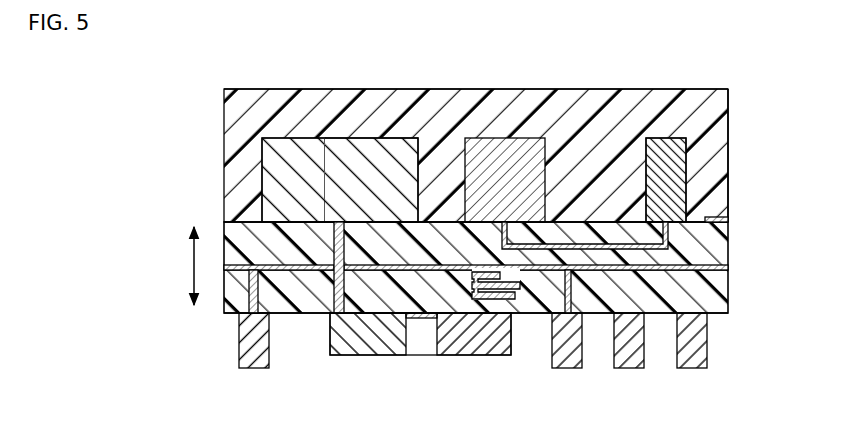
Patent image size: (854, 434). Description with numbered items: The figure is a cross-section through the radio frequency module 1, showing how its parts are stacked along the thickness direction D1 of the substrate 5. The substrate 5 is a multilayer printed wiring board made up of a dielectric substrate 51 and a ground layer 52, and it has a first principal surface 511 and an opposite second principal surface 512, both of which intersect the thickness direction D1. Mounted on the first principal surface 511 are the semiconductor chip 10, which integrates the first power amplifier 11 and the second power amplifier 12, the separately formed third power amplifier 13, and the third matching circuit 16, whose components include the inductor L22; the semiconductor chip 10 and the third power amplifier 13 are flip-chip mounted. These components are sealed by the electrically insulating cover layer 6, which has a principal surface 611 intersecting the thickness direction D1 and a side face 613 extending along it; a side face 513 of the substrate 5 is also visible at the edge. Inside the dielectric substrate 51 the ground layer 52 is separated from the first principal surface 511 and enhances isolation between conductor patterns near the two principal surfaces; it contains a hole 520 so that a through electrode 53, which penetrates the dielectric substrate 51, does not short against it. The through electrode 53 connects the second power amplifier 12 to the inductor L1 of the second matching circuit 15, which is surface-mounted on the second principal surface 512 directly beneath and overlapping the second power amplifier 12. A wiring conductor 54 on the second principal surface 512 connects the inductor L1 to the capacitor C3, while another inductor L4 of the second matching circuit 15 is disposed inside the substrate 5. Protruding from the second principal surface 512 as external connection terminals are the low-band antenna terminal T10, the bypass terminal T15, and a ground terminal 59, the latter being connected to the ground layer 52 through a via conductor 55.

The radio frequency module 1 is at (743, 62).
The substrate 5 is at (732, 244).
The cover layer 6 is at (732, 103).
The semiconductor chip 10 is at (261, 182).
The first power amplifier 11 is at (281, 151).
The second power amplifier 12 is at (370, 150).
The third power amplifier 13 is at (493, 140).
The second matching circuit 15 is at (375, 360).
The third matching circuit 16 is at (645, 158).
The dielectric substrate 51 is at (718, 302).
The ground layer 52 is at (277, 266).
The through electrode 53 is at (335, 242).
The wiring conductor 54 is at (428, 318).
The via conductor 55 is at (244, 315).
The ground terminal 59 is at (253, 368).
The first principal surface 511 is at (708, 219).
The second principal surface 512 is at (716, 316).
The side face of the substrate 513 is at (729, 269).
The hole 520 is at (333, 270).
The principal surface of the cover layer 611 is at (443, 88).
The side face of the cover layer 613 is at (729, 157).
The inductor L1 is at (347, 353).
The inductor L4 is at (471, 279).
The inductor L22 is at (665, 150).
The capacitor C3 is at (478, 353).
The low-band antenna terminal T10 is at (697, 368).
The bypass terminal T15 is at (628, 368).
The thickness direction D1 is at (178, 266).